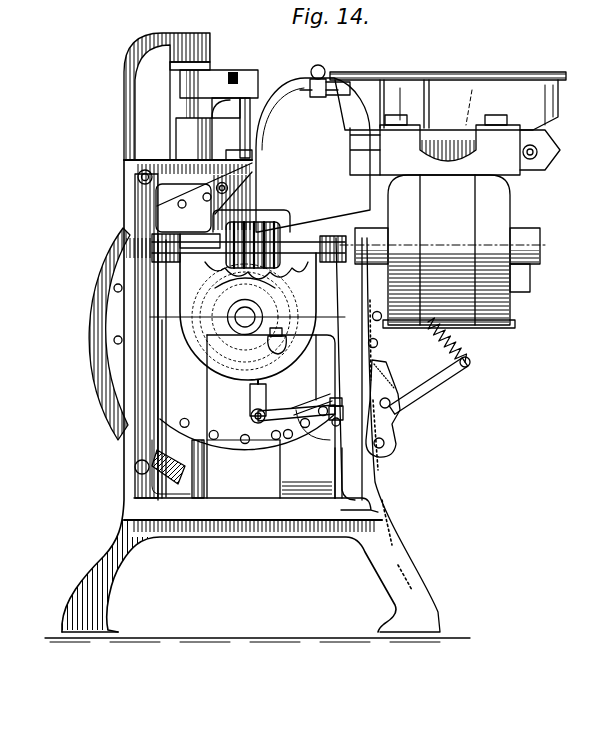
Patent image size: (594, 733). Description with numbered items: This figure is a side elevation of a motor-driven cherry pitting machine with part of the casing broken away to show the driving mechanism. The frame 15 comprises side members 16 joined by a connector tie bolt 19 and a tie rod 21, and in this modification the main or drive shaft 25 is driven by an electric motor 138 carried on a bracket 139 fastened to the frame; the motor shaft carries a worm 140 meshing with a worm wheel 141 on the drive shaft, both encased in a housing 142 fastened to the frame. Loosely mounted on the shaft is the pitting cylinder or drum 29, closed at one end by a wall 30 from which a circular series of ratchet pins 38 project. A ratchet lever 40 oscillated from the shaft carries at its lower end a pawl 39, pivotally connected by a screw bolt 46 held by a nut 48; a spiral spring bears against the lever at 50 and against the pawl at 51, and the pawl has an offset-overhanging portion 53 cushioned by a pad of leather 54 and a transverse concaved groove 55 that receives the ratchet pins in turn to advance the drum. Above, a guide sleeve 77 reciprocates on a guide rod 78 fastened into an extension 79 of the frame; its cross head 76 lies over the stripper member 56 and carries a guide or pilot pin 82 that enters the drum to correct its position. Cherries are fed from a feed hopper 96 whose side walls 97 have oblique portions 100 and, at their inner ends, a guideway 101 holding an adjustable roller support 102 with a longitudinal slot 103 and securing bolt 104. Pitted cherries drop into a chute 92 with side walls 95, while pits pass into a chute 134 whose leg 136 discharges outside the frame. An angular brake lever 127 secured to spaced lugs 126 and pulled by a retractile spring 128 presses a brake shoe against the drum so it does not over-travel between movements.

The frame 15 is at (126, 516).
The side members 16 is at (370, 473).
The extension of the frame 79 is at (142, 48).
The guide rod 78 is at (208, 64).
The cross head 76 is at (254, 76).
The guide sleeve 77 is at (190, 137).
The guide or pilot pin 82 is at (246, 118).
The connector tie bolt 19 is at (137, 177).
The housing 142 is at (208, 348).
The stripper member 56 is at (228, 188).
The chute 92 is at (90, 275).
The wall 30 is at (168, 376).
The ratchet pins 38 is at (112, 340).
The main or drive shaft 25 is at (247, 375).
The worm wheel 141 is at (236, 249).
The worm 140 is at (298, 232).
The feed hopper 96 is at (560, 96).
The side walls 97 is at (474, 88).
The oblique portions 100 is at (408, 85).
The roller support 102 is at (316, 66).
The longitudinal slot 103 is at (324, 82).
The securing bolt 104 is at (340, 80).
The guideway 101 is at (338, 90).
The bracket 139 is at (498, 160).
The tie rod 21 is at (537, 154).
The electric motor 138 is at (492, 217).
The retractile spring 128 is at (462, 346).
The angular brake lever 127 is at (422, 392).
The spaced lugs 126 is at (392, 446).
The screw bolt 46 is at (252, 412).
The nut 48 is at (252, 420).
The ratchet lever 40 is at (270, 408).
The pawl 39 is at (310, 404).
The spring end on pawl 51 is at (288, 356).
The offset-overhanging portion 53 is at (337, 398).
The pad of leather 54 is at (342, 410).
The transverse concaved groove 55 is at (338, 424).
The spring end on ratchet lever 50 is at (330, 420).
The pitting cylinder or drum 29 is at (246, 448).
The leg 136 is at (286, 487).
The chute 134 is at (338, 488).
The side walls 95 is at (150, 480).